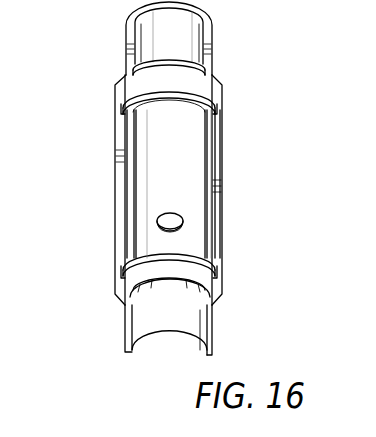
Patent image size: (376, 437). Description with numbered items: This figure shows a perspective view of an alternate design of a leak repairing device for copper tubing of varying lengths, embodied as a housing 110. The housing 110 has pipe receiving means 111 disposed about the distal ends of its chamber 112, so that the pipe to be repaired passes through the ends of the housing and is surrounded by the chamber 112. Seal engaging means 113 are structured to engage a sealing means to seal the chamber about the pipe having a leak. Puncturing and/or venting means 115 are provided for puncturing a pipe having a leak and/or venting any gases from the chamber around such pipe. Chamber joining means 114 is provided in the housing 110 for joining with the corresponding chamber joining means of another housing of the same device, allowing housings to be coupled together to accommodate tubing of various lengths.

The housing 110 is at (95, 292).
The pipe receiving means 111 is at (194, 50).
The chamber 112 is at (195, 175).
The seal engaging means 113 is at (206, 90).
The chamber joining means 114 is at (119, 205).
The puncturing and/or venting means 115 is at (183, 217).